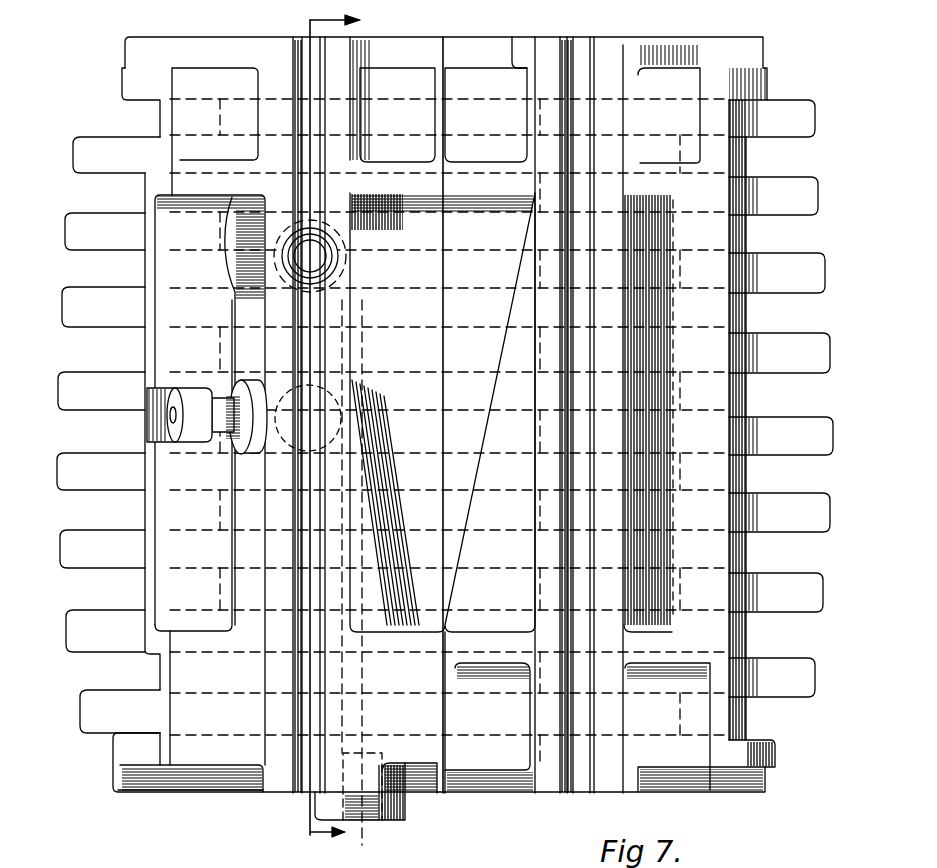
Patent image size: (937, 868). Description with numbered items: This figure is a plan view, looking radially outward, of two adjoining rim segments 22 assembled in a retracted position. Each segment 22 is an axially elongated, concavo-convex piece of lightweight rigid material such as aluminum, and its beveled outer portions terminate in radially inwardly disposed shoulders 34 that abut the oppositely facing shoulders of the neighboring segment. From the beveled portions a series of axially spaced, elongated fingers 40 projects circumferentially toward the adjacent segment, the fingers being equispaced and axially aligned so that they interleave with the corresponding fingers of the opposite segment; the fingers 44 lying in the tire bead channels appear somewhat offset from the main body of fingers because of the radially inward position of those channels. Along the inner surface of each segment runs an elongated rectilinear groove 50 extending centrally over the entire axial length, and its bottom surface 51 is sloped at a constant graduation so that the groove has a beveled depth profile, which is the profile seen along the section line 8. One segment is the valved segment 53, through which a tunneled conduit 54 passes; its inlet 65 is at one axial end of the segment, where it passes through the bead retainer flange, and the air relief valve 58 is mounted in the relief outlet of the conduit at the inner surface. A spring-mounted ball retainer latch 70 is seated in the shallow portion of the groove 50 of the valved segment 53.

The section line 8 is at (320, 429).
The segment 22 is at (770, 50).
The shoulder 34 is at (145, 580).
The fingers 40 is at (80, 318).
The fingers 44 is at (95, 150).
The groove 50 is at (565, 388).
The bottom surface 51 is at (590, 431).
The valved segment 53 is at (114, 800).
The tunneled conduit 54 is at (355, 670).
The air relief valve 58 is at (200, 438).
The inlet 65 is at (357, 583).
The ball retainer latch 70 is at (290, 280).